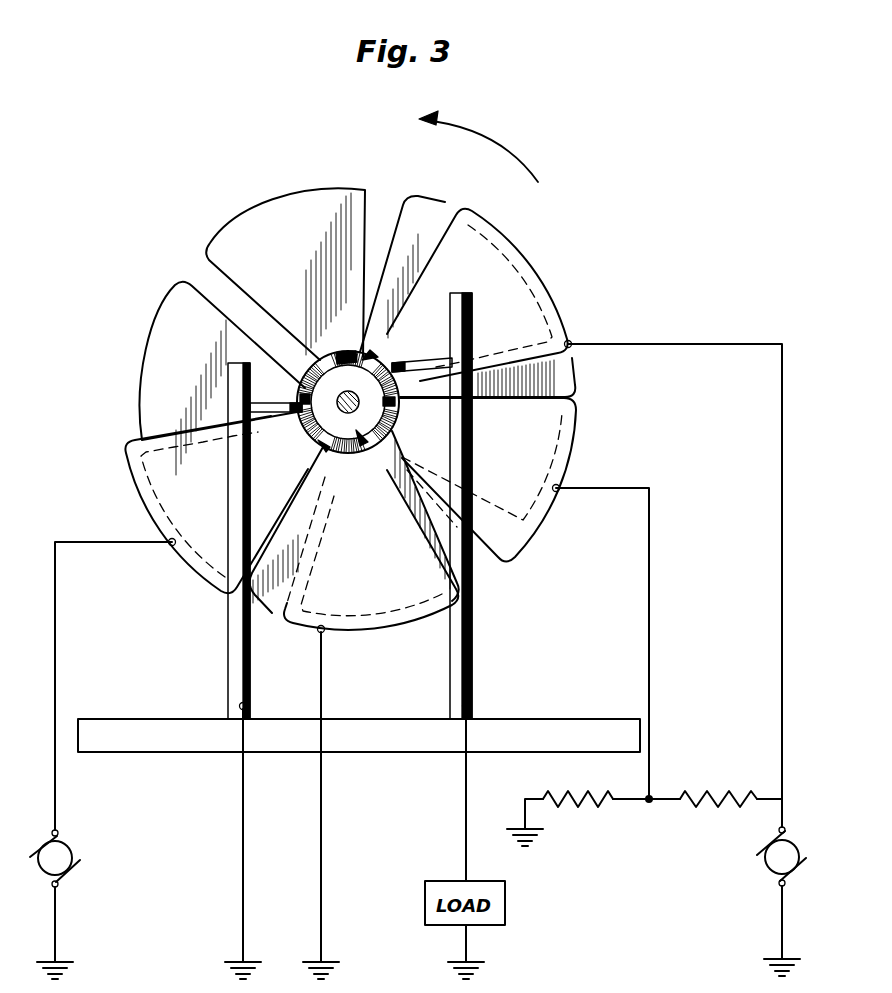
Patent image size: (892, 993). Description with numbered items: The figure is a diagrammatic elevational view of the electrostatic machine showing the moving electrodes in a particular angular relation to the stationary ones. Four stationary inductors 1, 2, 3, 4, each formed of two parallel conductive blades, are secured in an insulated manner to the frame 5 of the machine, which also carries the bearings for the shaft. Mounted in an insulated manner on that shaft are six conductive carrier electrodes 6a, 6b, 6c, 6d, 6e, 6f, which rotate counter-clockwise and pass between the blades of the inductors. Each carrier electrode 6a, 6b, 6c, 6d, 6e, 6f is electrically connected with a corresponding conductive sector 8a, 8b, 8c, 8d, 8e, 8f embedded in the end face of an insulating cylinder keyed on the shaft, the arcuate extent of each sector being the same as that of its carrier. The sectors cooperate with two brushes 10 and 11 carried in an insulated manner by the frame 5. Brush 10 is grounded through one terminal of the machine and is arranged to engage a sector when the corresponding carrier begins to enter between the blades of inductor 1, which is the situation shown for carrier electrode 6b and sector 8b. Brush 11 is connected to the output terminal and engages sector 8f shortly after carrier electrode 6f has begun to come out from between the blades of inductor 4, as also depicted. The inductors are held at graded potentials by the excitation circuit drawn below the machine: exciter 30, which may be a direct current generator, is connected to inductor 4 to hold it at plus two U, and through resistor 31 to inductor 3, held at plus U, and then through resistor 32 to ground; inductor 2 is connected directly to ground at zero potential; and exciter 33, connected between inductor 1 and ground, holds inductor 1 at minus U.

The inductor 1 is at (140, 508).
The inductor 2 is at (390, 635).
The inductor 3 is at (552, 513).
The inductor 4 is at (537, 267).
The frame 5 is at (538, 718).
The carrier electrode 6a is at (288, 185).
The carrier electrode 6b is at (143, 348).
The carrier electrode 6c is at (270, 607).
The carrier electrode 6d is at (485, 572).
The carrier electrode 6e is at (557, 380).
The carrier electrode 6f is at (431, 210).
The conductive sector 8a is at (343, 352).
The conductive sector 8b is at (313, 397).
The conductive sector 8c is at (306, 450).
The conductive sector 8d is at (350, 432).
The conductive sector 8e is at (380, 419).
The conductive sector 8f is at (359, 370).
The brush 10 is at (278, 402).
The brush 11 is at (420, 348).
The exciter 30 is at (767, 863).
The resistor 31 is at (712, 806).
The resistor 32 is at (578, 813).
The exciter 33 is at (63, 847).